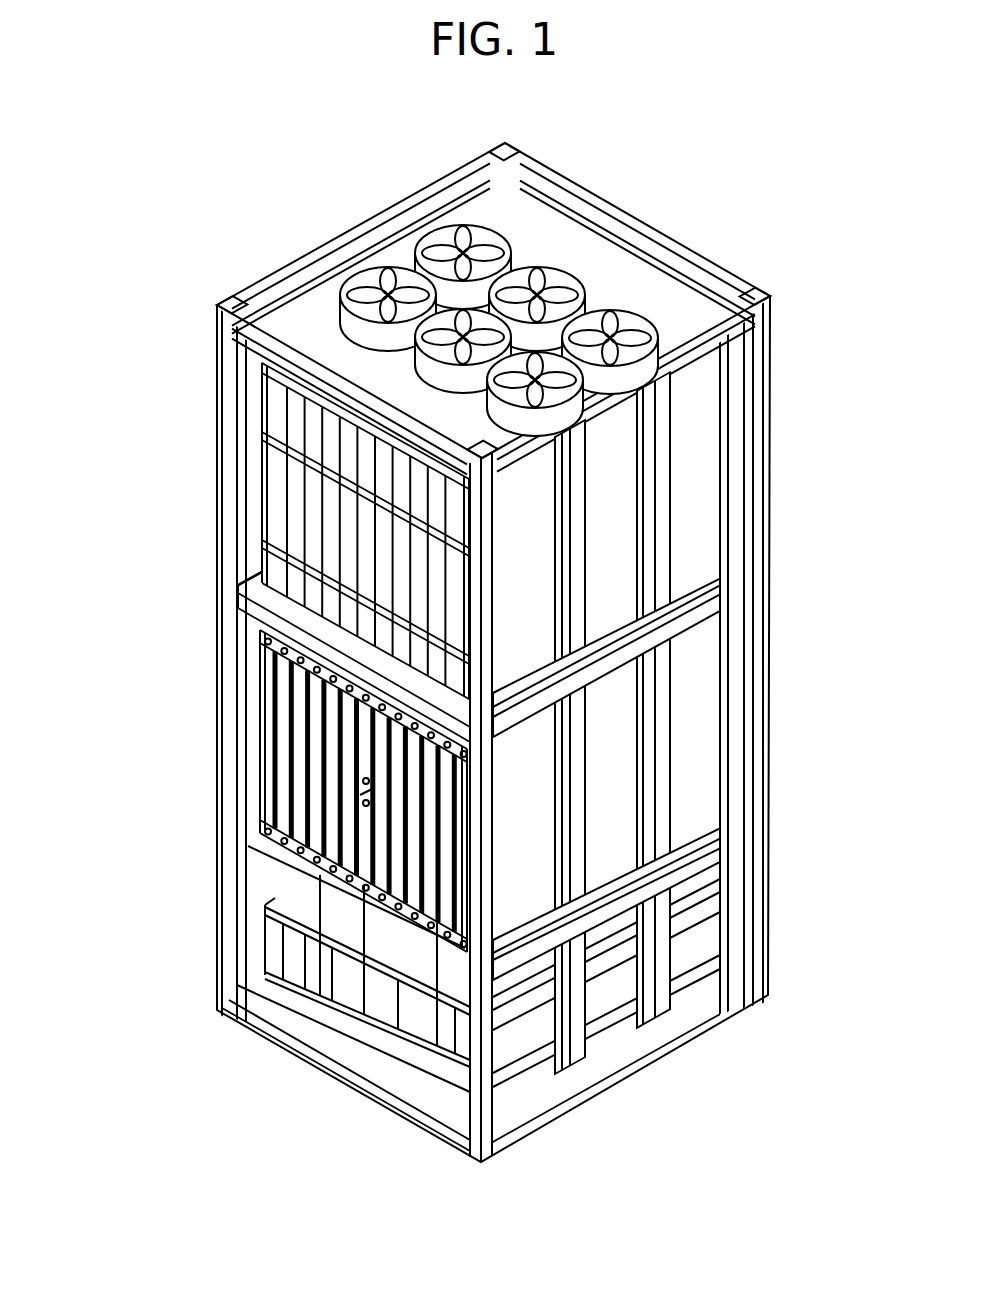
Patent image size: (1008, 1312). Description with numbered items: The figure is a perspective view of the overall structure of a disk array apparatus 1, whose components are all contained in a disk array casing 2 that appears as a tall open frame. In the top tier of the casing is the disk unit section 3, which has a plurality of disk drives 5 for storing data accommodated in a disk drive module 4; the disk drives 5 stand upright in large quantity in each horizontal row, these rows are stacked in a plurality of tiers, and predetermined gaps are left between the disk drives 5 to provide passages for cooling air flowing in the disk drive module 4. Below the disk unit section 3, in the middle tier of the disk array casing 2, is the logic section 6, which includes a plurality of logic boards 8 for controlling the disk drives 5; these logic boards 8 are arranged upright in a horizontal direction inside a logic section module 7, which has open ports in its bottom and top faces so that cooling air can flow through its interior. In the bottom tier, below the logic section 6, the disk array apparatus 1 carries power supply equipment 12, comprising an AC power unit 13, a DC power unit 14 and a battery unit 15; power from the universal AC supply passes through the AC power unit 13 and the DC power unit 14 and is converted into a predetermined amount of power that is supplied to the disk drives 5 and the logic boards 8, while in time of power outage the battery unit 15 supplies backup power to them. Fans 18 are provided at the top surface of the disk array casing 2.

The disk array apparatus 1 is at (222, 210).
The disk array casing 2 is at (770, 577).
The disk unit section 3 is at (277, 531).
The disk drive module 4 is at (522, 562).
The disk drives 5 is at (310, 483).
The logic section 6 is at (275, 791).
The logic section module 7 is at (697, 727).
The logic boards 8 is at (285, 722).
The power supply equipment 12 is at (284, 1038).
The AC power unit 13 is at (372, 1012).
The DC power unit 14 is at (335, 930).
The battery unit 15 is at (432, 1042).
The fans 18 is at (447, 233).